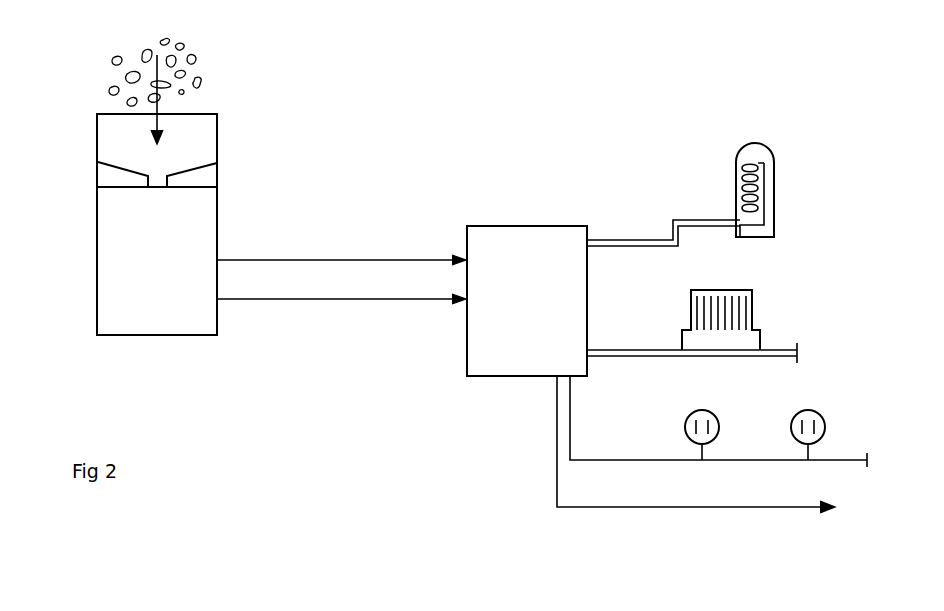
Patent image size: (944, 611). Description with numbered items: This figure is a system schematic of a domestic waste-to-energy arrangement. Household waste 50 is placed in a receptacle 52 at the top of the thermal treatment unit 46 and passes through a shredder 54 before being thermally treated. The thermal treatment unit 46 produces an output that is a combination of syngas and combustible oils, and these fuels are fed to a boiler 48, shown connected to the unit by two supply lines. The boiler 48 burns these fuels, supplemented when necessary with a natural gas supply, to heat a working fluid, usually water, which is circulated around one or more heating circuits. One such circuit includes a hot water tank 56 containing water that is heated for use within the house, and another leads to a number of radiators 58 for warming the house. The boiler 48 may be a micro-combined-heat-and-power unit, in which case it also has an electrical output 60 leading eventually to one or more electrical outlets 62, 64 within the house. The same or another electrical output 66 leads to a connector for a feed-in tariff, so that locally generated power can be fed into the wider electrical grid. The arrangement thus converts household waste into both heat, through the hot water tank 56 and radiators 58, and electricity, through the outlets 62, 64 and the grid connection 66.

The thermal treatment unit 46 is at (137, 260).
The boiler 48 is at (513, 232).
The waste 50 is at (183, 75).
The receptacle 52 is at (125, 137).
The shredder 54 is at (113, 177).
The hot water tank 56 is at (773, 168).
The radiators 58 is at (752, 298).
The electrical output 60 is at (568, 402).
The electrical outlet 62 is at (718, 418).
The electrical outlet 64 is at (823, 415).
The electrical output 66 is at (724, 508).